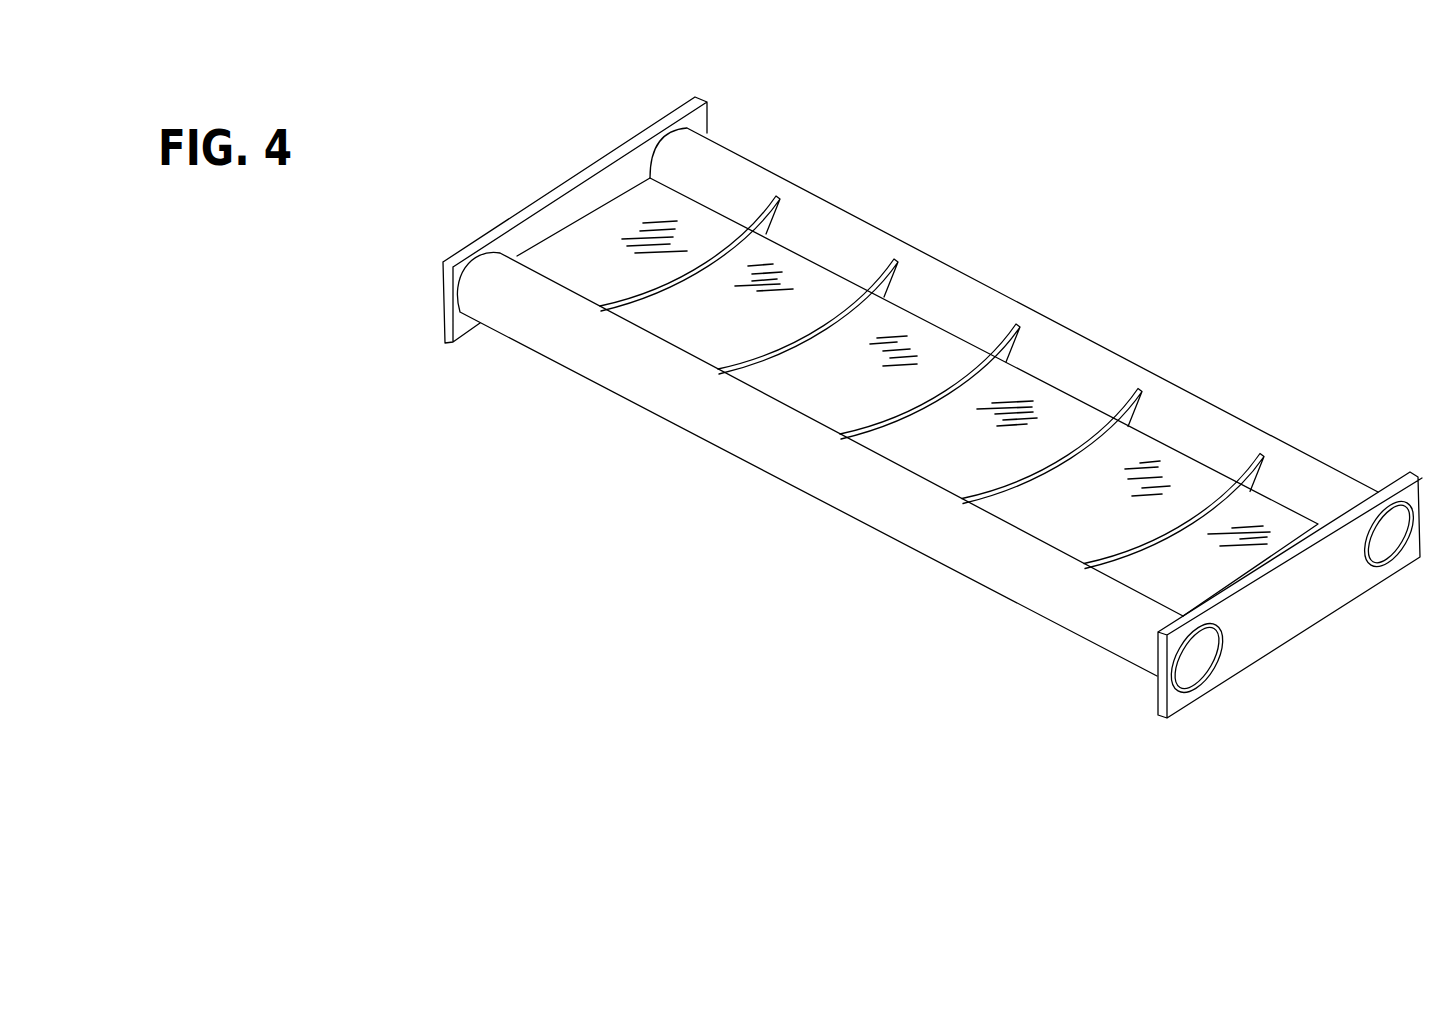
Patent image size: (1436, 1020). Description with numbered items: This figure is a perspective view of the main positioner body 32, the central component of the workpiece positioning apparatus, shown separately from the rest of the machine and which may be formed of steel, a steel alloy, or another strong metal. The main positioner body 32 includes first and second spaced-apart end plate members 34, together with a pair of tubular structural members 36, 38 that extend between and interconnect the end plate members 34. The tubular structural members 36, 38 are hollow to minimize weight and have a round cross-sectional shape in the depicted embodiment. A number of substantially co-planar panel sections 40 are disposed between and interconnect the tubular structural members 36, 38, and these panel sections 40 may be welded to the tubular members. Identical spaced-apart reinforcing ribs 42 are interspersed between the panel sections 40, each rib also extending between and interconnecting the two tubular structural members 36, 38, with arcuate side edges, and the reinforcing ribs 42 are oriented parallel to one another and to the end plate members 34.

The main positioner body 32 is at (1095, 247).
The end plate members 34 is at (567, 180).
The tubular structural member 36 is at (943, 280).
The tubular structural member 38 is at (887, 512).
The panel sections 40 is at (752, 336).
The reinforcing ribs 42 is at (847, 322).